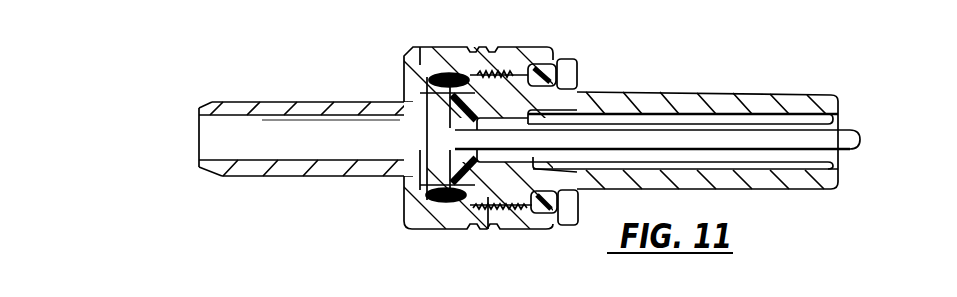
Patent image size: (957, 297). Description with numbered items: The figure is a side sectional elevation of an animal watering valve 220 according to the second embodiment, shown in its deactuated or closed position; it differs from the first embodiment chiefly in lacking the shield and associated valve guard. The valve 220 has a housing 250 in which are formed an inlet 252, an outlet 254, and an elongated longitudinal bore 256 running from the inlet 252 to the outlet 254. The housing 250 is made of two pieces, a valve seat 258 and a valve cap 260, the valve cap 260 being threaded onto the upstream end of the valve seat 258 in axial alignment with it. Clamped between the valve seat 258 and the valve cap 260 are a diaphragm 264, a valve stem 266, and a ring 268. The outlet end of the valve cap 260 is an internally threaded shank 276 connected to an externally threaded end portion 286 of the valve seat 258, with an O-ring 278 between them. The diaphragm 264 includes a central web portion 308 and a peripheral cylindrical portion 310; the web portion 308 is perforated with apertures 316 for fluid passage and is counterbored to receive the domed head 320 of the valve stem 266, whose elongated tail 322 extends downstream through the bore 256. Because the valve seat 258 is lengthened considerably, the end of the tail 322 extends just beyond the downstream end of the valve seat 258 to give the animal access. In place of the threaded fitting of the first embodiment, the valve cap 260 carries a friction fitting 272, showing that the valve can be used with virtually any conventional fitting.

The animal watering valve 220 is at (537, 148).
The housing 250 is at (266, 183).
The inlet 252 is at (216, 118).
The outlet 254 is at (834, 118).
The longitudinal bore 256 is at (787, 167).
The valve seat 258 is at (805, 88).
The valve cap 260 is at (418, 47).
The diaphragm 264 is at (408, 62).
The valve stem 266 is at (738, 118).
The ring 268 is at (494, 72).
The friction fitting 272 is at (243, 70).
The internally threaded shank 276 is at (512, 214).
The O-ring 278 is at (568, 73).
The externally threaded end portion 286 is at (518, 68).
The central web portion 308 is at (400, 108).
The peripheral cylindrical portion 310 is at (430, 105).
The apertures 316 is at (413, 200).
The domed head 320 is at (402, 183).
The elongated tail 322 is at (858, 148).